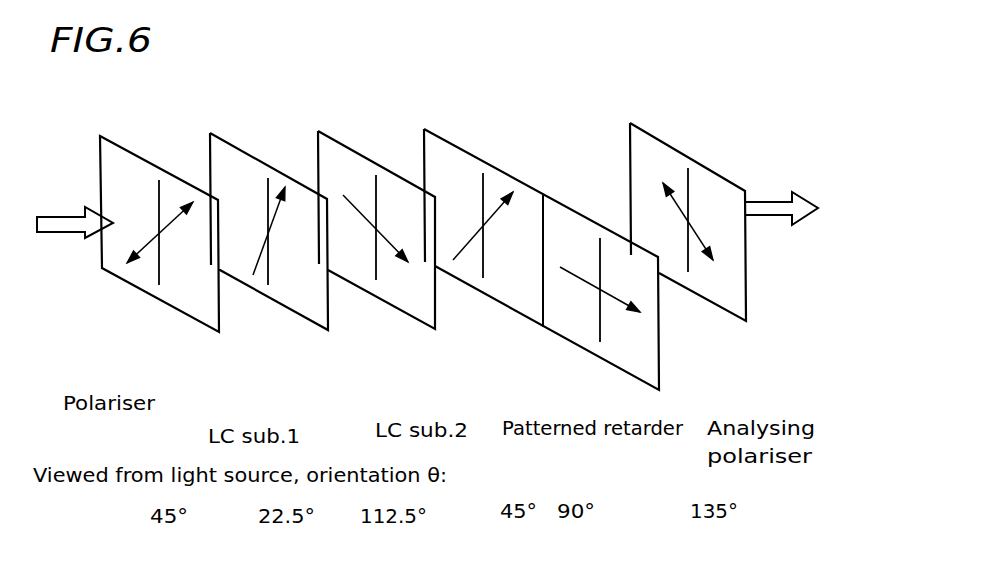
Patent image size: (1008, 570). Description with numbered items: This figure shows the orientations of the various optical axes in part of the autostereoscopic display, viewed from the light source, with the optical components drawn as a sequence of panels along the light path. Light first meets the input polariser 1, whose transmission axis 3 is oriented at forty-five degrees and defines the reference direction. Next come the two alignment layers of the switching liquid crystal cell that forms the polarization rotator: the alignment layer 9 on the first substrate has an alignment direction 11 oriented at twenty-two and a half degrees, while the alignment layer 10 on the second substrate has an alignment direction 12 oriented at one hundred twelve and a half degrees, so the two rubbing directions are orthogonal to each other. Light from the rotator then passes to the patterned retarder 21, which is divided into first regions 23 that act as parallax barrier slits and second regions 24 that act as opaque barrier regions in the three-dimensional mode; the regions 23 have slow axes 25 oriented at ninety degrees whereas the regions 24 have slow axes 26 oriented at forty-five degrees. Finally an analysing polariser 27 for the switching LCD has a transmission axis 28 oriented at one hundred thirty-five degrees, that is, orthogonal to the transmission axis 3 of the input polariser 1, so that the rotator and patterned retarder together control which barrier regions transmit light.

The input polariser 1 is at (162, 300).
The transmission axis 3 is at (152, 237).
The alignment layer 9 is at (260, 293).
The alignment layer 10 is at (393, 305).
The alignment direction 11 is at (283, 198).
The alignment direction 12 is at (398, 215).
The patterned retarder 21 is at (517, 317).
The first regions 23 is at (621, 261).
The second regions 24 is at (442, 155).
The slow axes 25 is at (575, 273).
The slow axes 26 is at (492, 210).
The analysing polariser 27 is at (723, 293).
The transmission axis 28 is at (700, 237).